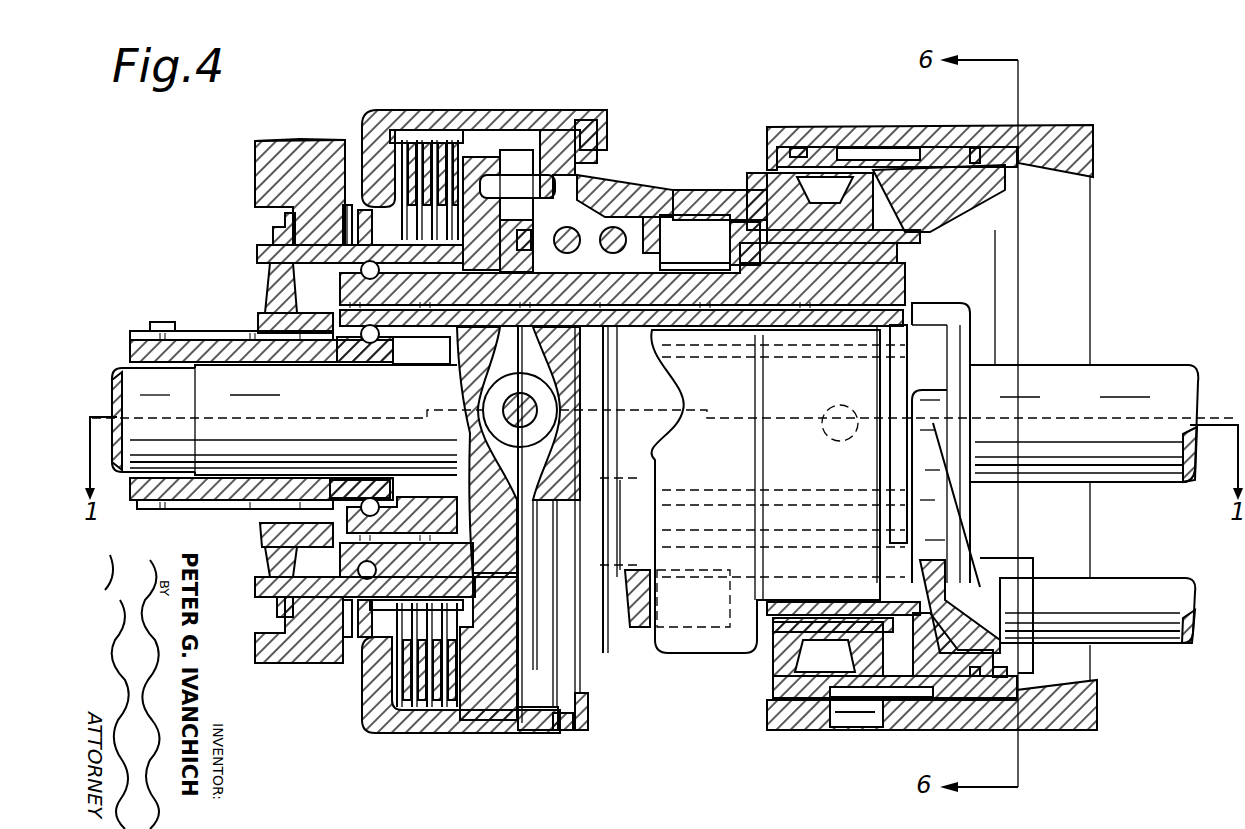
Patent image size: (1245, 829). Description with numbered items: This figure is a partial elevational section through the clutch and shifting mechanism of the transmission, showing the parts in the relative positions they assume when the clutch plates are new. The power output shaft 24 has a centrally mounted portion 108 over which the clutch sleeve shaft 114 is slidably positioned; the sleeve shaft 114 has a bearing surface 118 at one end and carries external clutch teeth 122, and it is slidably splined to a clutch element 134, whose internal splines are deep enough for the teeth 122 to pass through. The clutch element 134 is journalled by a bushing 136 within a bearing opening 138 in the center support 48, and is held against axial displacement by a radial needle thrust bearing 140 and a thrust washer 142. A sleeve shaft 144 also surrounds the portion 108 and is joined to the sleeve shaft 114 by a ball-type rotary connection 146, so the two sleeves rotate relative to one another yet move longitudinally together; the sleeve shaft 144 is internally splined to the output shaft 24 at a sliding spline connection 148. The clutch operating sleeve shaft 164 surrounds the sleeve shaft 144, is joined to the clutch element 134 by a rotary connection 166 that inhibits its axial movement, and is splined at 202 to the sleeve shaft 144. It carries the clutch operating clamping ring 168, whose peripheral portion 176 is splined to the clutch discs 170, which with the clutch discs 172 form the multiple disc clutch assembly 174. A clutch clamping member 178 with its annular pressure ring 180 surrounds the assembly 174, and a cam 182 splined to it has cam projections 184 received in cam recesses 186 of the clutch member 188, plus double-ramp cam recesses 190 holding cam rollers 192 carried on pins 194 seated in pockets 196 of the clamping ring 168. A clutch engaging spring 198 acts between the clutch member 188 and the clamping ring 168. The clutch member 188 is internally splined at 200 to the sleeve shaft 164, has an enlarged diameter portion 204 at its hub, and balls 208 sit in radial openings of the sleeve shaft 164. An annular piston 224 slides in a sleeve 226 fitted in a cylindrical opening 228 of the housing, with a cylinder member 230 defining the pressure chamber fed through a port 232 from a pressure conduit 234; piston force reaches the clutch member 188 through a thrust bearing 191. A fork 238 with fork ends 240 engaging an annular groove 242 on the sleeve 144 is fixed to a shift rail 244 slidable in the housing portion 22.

The housing portion 22 is at (932, 404).
The power output shaft 24 is at (1084, 404).
The center support 48 is at (270, 122).
The centrally mounted shaft portion 108 is at (278, 383).
The clutch sleeve shaft 114 is at (261, 320).
The bearing surface 118 is at (261, 437).
The external clutch teeth 122 is at (185, 294).
The clutch element 134 is at (312, 402).
The bushing 136 is at (229, 224).
The bearing opening 138 is at (365, 639).
The radial needle thrust bearing 140 is at (259, 186).
The thrust washer 142 is at (270, 199).
The sleeve shaft 144 is at (621, 421).
The rotary connection 146 is at (614, 420).
The sliding spline connection 148 is at (391, 417).
The clutch operating sleeve shaft 164 is at (696, 252).
The rotary connection 166 is at (378, 555).
The clutch operating clamping ring 168 is at (487, 551).
The clutch discs 170 is at (424, 145).
The clutch discs 172 is at (399, 145).
The multiple disc clutch assembly 174 is at (444, 127).
The peripheral portion 176 is at (493, 152).
The clutch clamping member 178 is at (461, 706).
The annular pressure ring 180 is at (455, 148).
The cam 182 is at (578, 528).
The cam projections 184 is at (672, 284).
The cam recesses 186 is at (752, 400).
The clutch member 188 is at (803, 349).
The cam recesses 190 is at (581, 279).
The thrust bearing 191 is at (690, 648).
The cam rollers 192 is at (563, 216).
The pins 194 is at (556, 252).
The pockets 196 is at (447, 263).
The clutch engaging spring 198 is at (601, 187).
The internal spline 200 is at (710, 242).
The spline 202 is at (866, 429).
The enlarged diameter portion 204 is at (880, 431).
The balls 208 is at (817, 440).
The annular piston 224 is at (825, 372).
The sleeve 226 is at (895, 391).
The cylindrical opening 228 is at (898, 379).
The cylinder member 230 is at (971, 420).
The port 232 is at (885, 389).
The pressure conduit 234 is at (832, 744).
The fork 238 is at (994, 548).
The fork ends 240 is at (991, 485).
The annular groove 242 is at (991, 443).
The shift rail 244 is at (1097, 586).